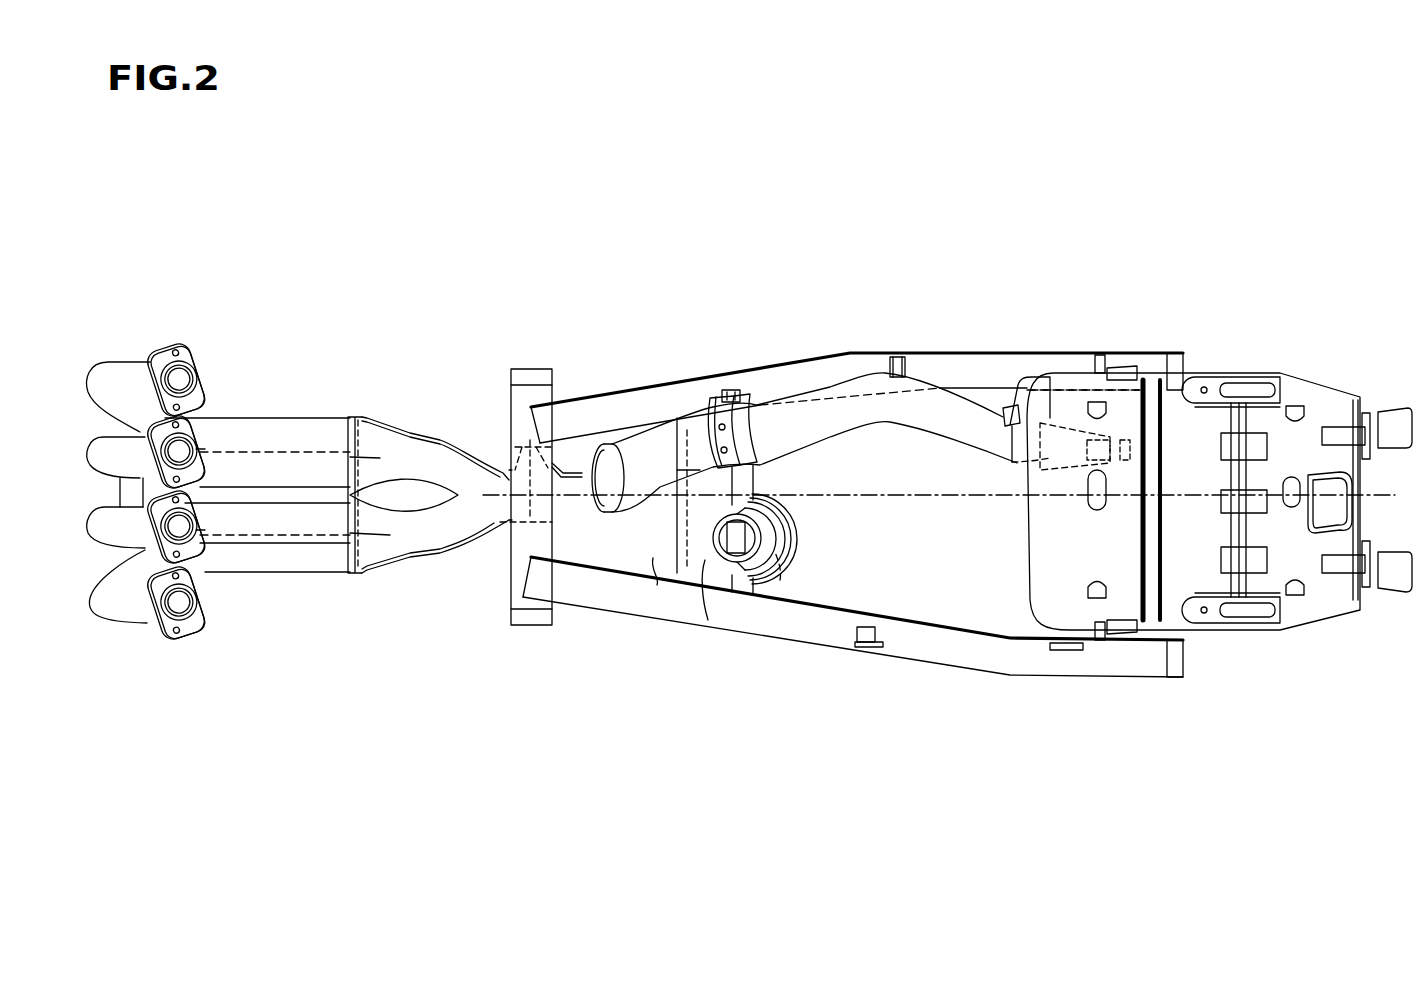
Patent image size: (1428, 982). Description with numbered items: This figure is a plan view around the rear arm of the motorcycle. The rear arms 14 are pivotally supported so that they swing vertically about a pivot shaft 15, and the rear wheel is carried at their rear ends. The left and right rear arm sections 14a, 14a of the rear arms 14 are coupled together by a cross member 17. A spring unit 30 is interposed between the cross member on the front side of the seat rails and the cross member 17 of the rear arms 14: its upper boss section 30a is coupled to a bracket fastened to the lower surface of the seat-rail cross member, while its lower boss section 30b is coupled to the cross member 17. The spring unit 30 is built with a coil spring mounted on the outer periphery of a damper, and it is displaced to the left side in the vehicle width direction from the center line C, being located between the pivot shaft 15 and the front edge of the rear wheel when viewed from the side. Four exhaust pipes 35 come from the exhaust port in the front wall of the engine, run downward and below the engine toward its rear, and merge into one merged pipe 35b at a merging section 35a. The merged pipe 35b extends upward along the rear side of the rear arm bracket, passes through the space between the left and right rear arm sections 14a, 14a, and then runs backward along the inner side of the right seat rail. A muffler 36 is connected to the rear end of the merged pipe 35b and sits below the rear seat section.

The rear arms 14 is at (723, 364).
The rear arm sections 14a is at (987, 352).
The pivot shaft 15 is at (510, 570).
The cross member 17 is at (677, 560).
The spring unit 30 is at (797, 548).
The upper boss section 30a is at (707, 550).
The lower boss section 30b is at (780, 580).
The exhaust pipes 35 is at (265, 421).
The merging section 35a is at (473, 447).
The merged pipe 35b is at (662, 432).
The muffler 36 is at (1320, 377).
The center line C is at (993, 500).